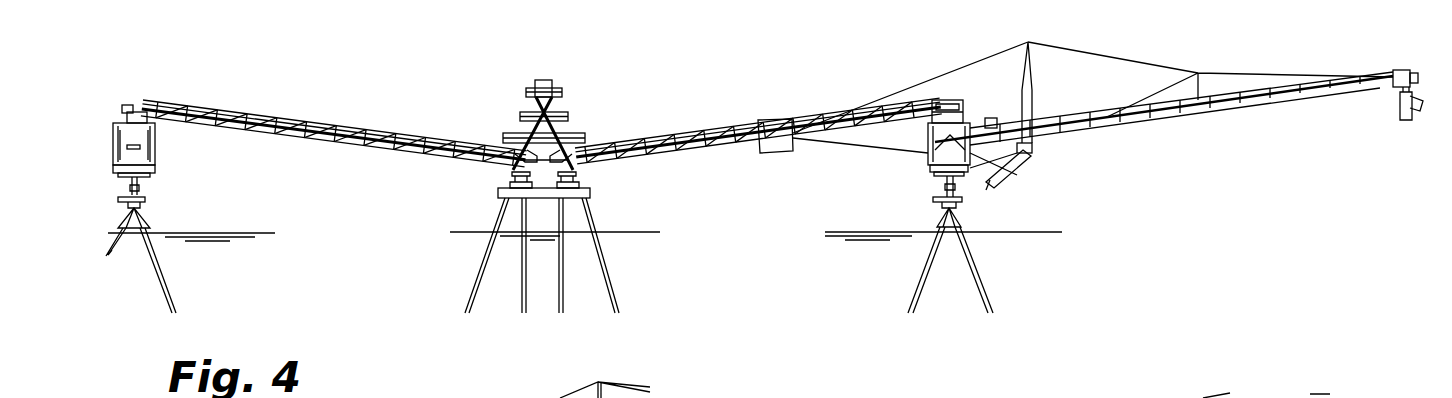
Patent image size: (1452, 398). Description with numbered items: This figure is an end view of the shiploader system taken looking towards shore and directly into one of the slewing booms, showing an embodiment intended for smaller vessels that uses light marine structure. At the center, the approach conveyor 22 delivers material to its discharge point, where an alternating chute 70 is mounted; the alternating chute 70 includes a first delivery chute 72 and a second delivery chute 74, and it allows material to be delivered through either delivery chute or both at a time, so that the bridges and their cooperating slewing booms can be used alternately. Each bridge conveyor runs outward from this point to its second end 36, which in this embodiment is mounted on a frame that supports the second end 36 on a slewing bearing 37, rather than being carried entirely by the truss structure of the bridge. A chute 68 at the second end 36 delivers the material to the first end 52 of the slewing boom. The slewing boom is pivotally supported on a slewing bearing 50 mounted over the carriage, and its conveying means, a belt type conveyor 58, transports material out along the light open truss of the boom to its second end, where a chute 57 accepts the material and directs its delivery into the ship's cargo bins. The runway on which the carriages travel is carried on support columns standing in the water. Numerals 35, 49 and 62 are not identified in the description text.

The approach conveyor 22 is at (536, 82).
The pivot bearing 35 is at (580, 181).
The second end of the bridge conveyor 36 is at (915, 104).
The slewing bearing 37 is at (995, 121).
The mast 49 is at (1021, 70).
The slewing bearing 50 is at (994, 187).
The first end of the slewing boom 52 is at (1008, 183).
The chute 57 is at (1398, 108).
The belt type conveyor 58 is at (1085, 79).
The support platform 62 is at (498, 196).
The chute 68 is at (134, 128).
The alternating chute 70 is at (553, 88).
The first delivery chute 72 is at (525, 130).
The second delivery chute 74 is at (575, 130).